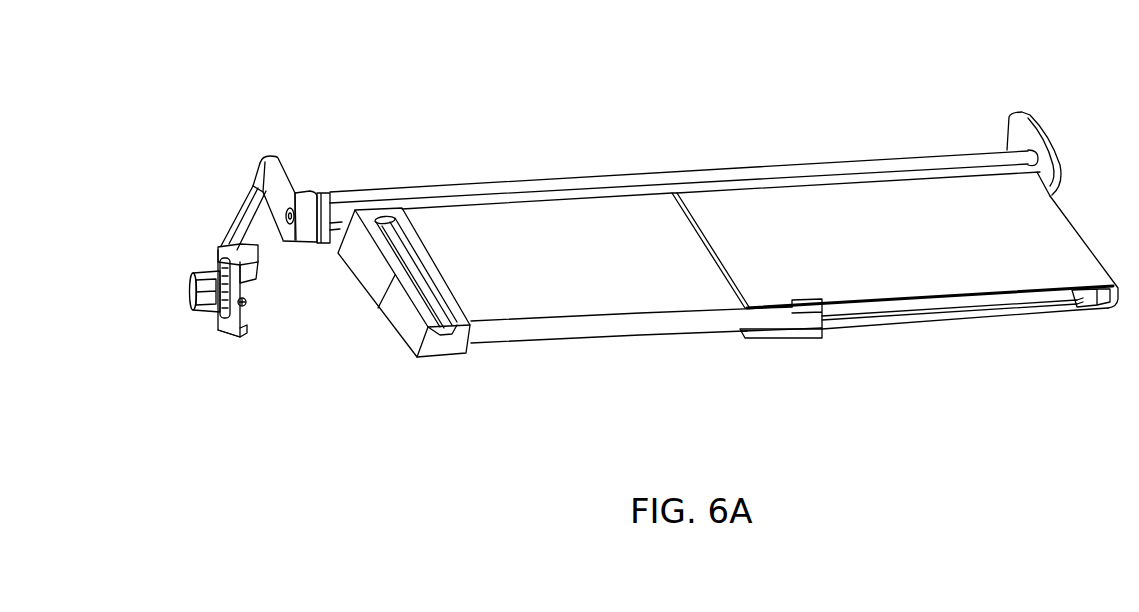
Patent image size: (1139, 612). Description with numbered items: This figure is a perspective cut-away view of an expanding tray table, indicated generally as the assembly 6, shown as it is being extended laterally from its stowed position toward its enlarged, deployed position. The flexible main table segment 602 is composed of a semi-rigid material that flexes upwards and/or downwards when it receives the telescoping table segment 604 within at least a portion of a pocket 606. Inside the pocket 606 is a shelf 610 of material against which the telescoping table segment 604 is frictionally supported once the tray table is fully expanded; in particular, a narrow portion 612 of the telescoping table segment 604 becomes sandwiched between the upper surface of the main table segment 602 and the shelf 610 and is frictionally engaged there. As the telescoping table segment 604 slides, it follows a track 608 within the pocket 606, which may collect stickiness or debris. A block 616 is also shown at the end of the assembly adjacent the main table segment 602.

The display assembly 6 is at (306, 86).
The first panel 602 is at (882, 244).
The second panel 604 is at (602, 273).
The hinge region 606 is at (715, 342).
The tray 608 is at (908, 314).
The coupling member 610 is at (694, 233).
The tab 612 is at (806, 295).
The mounting block 616 is at (378, 308).